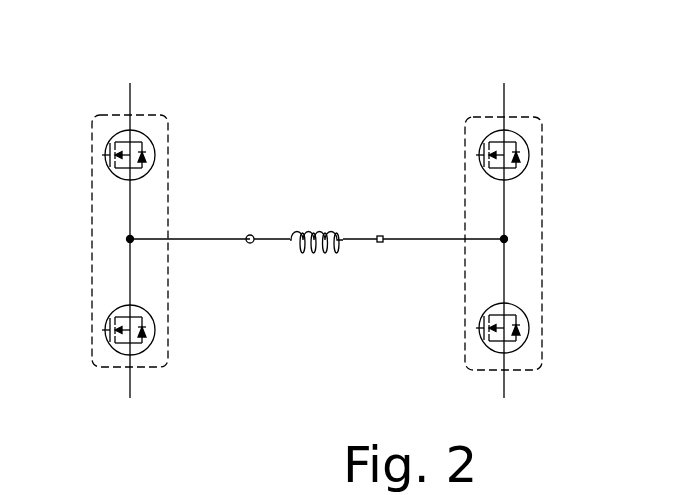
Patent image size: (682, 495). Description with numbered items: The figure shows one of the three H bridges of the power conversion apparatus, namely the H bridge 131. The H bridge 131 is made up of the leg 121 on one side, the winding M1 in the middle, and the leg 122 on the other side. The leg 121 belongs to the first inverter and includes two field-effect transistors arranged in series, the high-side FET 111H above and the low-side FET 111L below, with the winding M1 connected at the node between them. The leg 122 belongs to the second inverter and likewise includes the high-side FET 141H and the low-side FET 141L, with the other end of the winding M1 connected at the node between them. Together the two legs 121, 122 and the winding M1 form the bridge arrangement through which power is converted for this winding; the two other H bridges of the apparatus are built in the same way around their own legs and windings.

The H bridge 131 is at (383, 65).
The leg 121 is at (120, 114).
The leg 122 is at (528, 116).
The FET 111H is at (106, 143).
The FET 111L is at (108, 312).
The FET 141H is at (481, 142).
The FET 141L is at (481, 314).
The winding M1 is at (305, 222).